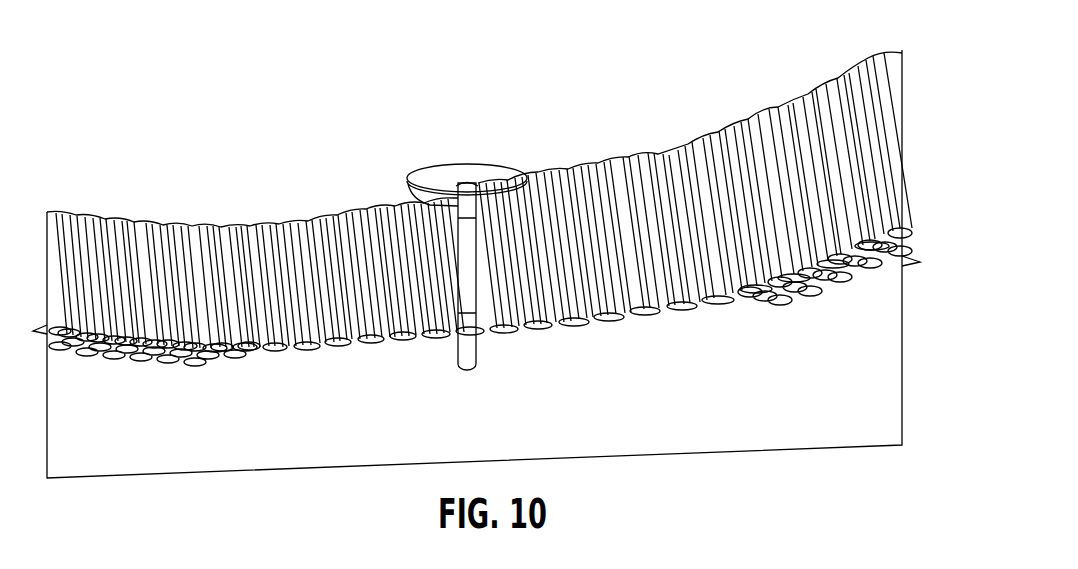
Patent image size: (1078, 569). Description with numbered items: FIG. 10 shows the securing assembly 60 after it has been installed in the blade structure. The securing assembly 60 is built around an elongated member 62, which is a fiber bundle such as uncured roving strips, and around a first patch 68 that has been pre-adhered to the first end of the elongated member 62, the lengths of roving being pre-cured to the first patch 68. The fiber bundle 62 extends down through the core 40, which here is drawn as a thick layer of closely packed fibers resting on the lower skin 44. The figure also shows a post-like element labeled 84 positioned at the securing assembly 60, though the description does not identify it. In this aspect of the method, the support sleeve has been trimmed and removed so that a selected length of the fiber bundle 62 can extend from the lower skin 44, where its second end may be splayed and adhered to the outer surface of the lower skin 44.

The core 40 is at (773, 117).
The lower skin 44 is at (885, 358).
The securing assembly 60 is at (467, 228).
The elongated member 62 is at (458, 208).
The first patch 68 is at (458, 163).
The post 84 is at (470, 270).